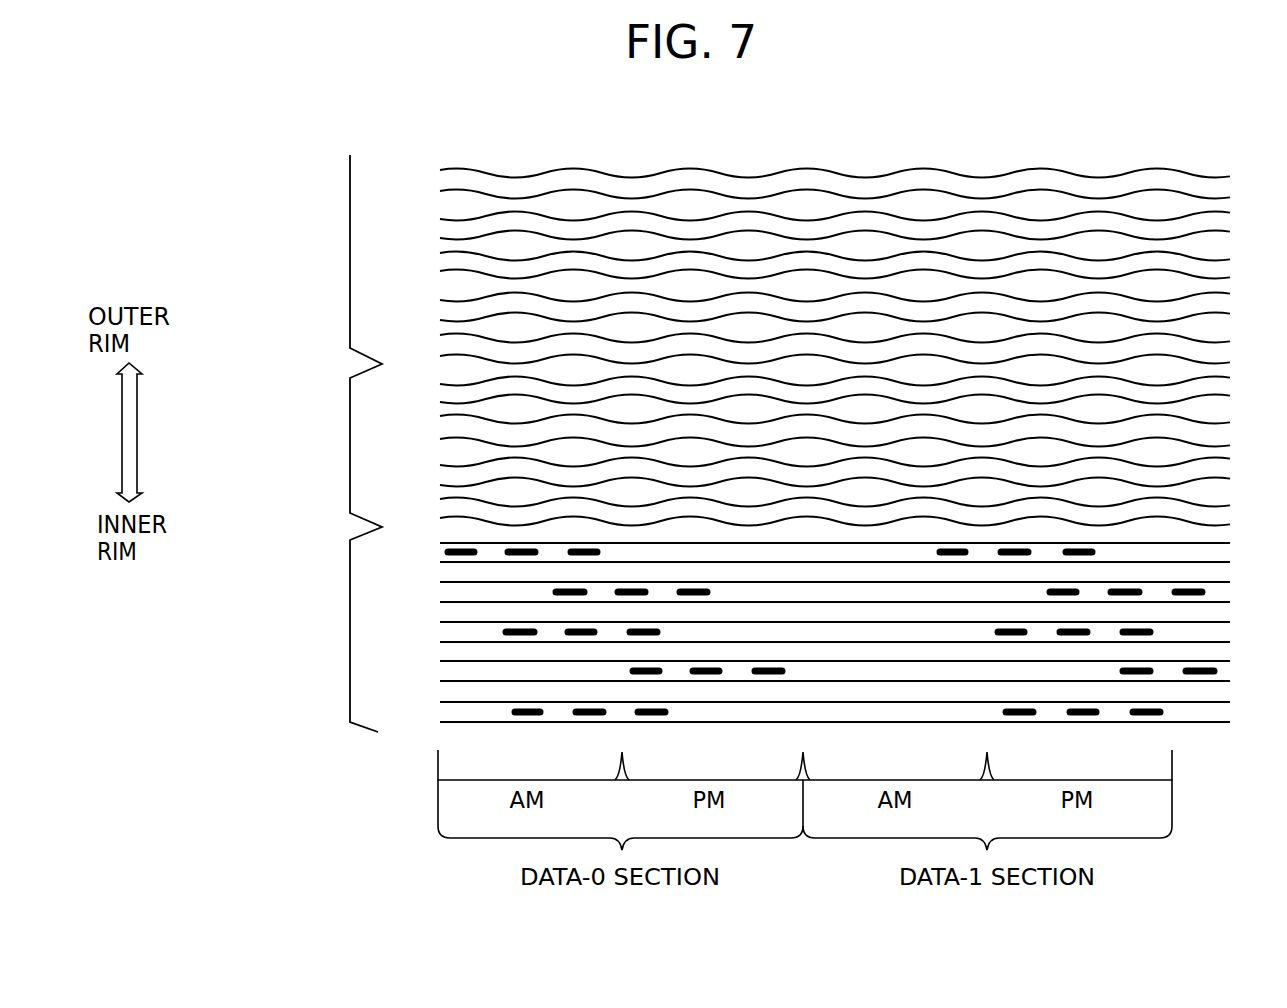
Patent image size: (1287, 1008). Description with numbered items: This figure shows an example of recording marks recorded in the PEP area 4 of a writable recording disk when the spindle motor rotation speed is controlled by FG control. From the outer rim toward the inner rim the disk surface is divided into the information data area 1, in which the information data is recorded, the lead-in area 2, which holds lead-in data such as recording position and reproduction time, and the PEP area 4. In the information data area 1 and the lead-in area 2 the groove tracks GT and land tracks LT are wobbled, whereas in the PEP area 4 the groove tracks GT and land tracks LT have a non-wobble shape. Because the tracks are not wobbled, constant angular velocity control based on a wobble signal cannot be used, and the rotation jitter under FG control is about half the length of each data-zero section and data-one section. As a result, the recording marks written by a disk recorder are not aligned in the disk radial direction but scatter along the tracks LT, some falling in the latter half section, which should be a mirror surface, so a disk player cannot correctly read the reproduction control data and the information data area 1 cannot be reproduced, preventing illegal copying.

The land track LT is at (447, 182).
The groove track GT is at (447, 210).
The information data area 1 is at (728, 277).
The lead-in area 2 is at (731, 460).
The PEP area 4 is at (731, 637).